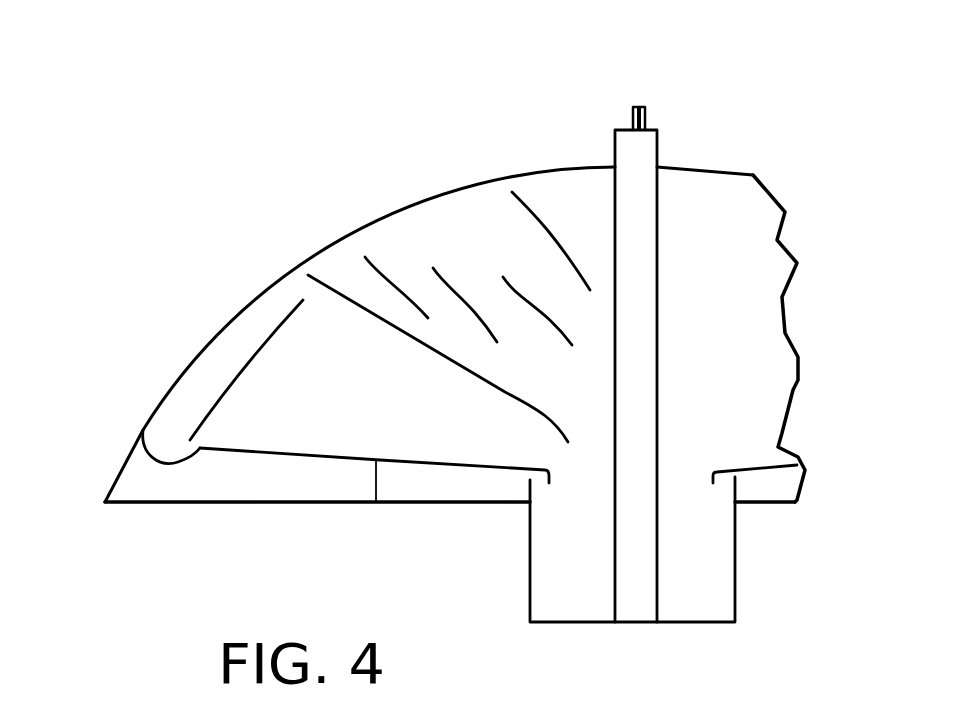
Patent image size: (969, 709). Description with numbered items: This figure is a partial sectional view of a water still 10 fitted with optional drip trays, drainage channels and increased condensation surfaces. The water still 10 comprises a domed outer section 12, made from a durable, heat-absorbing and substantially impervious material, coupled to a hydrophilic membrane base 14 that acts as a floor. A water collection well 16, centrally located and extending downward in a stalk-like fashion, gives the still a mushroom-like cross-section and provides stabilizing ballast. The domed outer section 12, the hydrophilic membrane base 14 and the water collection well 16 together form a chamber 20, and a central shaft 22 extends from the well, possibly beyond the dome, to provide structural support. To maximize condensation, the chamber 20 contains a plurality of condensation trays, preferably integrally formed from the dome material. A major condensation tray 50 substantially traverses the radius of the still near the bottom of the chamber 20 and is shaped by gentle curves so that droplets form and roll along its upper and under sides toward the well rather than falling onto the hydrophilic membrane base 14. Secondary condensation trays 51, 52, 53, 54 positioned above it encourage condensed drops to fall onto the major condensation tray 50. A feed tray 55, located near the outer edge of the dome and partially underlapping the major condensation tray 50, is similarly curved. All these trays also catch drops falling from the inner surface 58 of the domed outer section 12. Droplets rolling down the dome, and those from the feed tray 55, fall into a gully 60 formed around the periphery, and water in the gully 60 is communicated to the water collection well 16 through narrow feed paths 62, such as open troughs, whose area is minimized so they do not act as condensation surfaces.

The water still 10 is at (343, 125).
The domed outer section 12 is at (178, 375).
The hydrophilic membrane base 14 is at (305, 508).
The water collection well 16 is at (580, 623).
The chamber 20 is at (554, 380).
The central shaft 22 is at (657, 290).
The major condensation tray 50 is at (320, 280).
The secondary condensation tray 51 is at (387, 282).
The secondary condensation tray 52 is at (440, 265).
The secondary condensation tray 53 is at (503, 277).
The secondary condensation tray 54 is at (528, 203).
The feed tray 55 is at (280, 340).
The inner surface 58 is at (605, 167).
The gully 60 is at (163, 452).
The feed path 62 is at (377, 507).